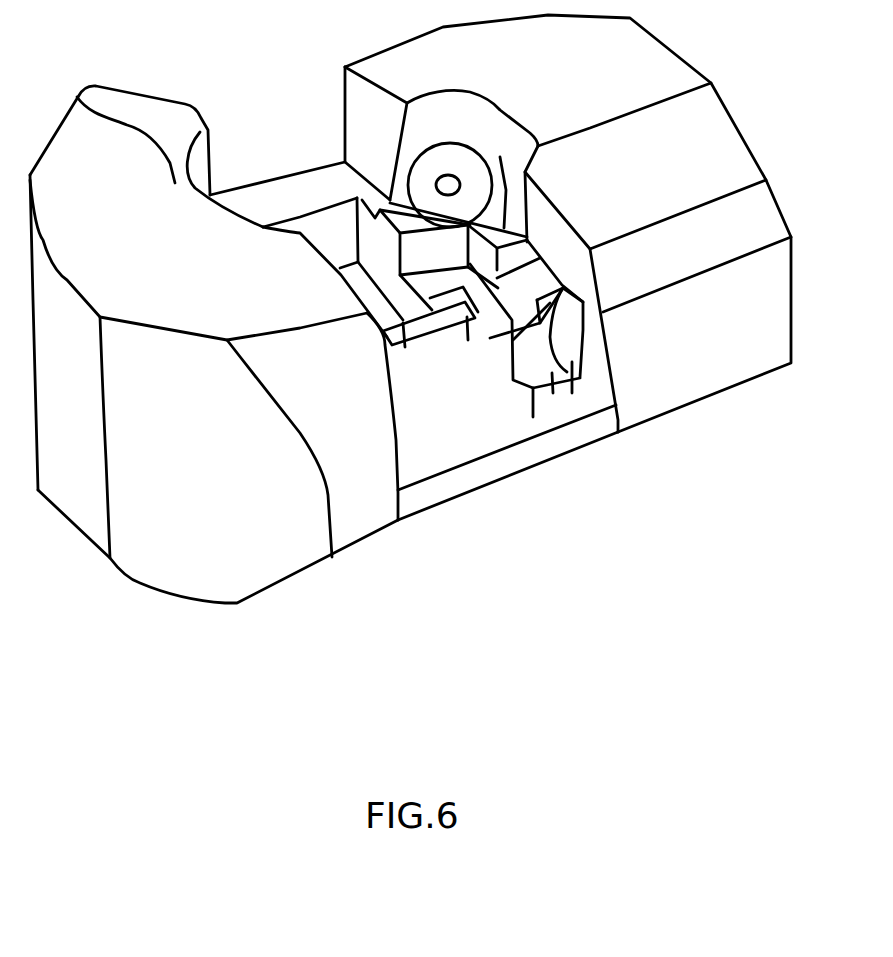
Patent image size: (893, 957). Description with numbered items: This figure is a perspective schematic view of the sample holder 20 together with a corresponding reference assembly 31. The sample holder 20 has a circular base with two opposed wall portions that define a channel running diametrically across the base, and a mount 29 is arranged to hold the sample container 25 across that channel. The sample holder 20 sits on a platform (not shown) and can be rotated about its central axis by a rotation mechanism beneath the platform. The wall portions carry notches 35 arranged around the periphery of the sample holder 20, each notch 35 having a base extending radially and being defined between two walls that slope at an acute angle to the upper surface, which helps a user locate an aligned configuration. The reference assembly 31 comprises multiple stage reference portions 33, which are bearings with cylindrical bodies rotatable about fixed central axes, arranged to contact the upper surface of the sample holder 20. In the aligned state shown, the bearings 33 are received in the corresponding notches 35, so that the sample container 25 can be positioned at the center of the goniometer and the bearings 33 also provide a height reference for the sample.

The sample holder 20 is at (543, 403).
The sample container 25 is at (387, 337).
The mount 29 is at (425, 320).
The reference assembly 31 is at (78, 100).
The stage reference portions 33 is at (433, 160).
The notches 35 is at (583, 380).